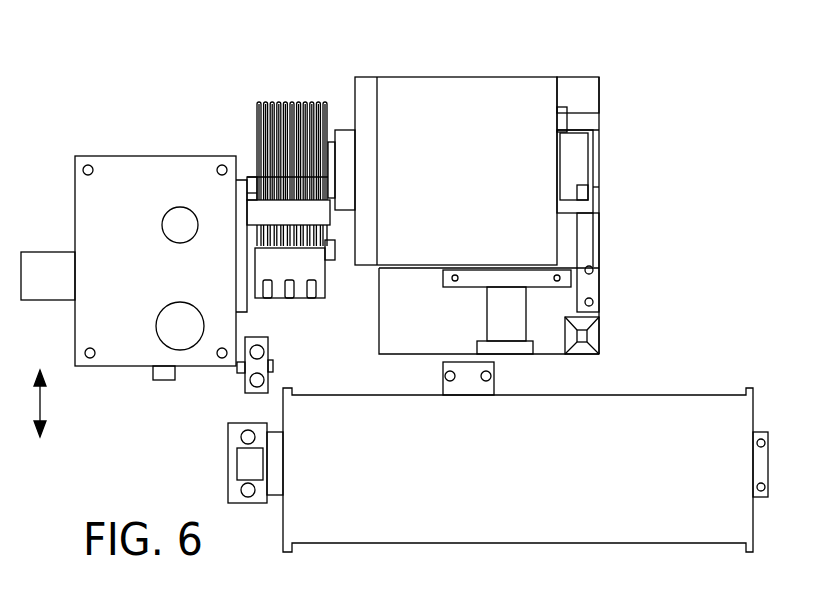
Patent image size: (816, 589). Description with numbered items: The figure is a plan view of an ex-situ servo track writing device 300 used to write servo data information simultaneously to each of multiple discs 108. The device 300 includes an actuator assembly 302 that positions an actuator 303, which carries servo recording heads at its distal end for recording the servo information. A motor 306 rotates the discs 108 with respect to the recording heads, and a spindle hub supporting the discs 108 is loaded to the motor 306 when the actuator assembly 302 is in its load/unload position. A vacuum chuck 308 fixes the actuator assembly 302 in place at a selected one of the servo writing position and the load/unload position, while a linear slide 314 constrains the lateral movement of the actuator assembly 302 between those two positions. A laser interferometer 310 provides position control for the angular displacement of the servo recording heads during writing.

The ex-situ servo track writing device 300 is at (627, 66).
The actuator assembly 302 is at (150, 168).
The discs 108 is at (287, 100).
The actuator 303 is at (297, 300).
The motor 306 is at (472, 90).
The vacuum chuck 308 is at (637, 533).
The laser interferometer 310 is at (246, 395).
The linear slide 314 is at (152, 380).